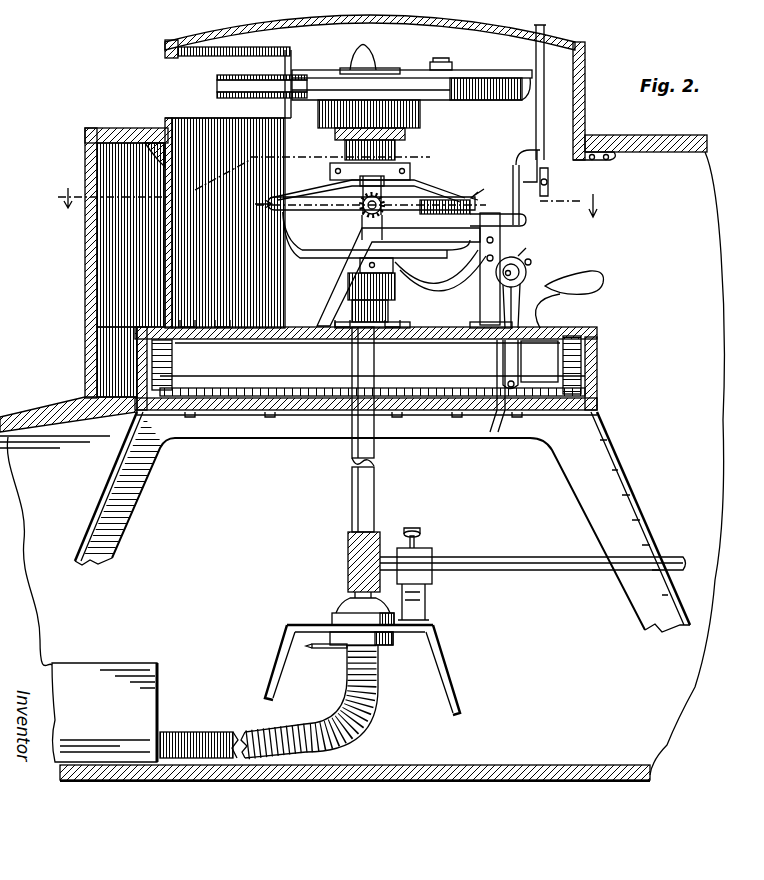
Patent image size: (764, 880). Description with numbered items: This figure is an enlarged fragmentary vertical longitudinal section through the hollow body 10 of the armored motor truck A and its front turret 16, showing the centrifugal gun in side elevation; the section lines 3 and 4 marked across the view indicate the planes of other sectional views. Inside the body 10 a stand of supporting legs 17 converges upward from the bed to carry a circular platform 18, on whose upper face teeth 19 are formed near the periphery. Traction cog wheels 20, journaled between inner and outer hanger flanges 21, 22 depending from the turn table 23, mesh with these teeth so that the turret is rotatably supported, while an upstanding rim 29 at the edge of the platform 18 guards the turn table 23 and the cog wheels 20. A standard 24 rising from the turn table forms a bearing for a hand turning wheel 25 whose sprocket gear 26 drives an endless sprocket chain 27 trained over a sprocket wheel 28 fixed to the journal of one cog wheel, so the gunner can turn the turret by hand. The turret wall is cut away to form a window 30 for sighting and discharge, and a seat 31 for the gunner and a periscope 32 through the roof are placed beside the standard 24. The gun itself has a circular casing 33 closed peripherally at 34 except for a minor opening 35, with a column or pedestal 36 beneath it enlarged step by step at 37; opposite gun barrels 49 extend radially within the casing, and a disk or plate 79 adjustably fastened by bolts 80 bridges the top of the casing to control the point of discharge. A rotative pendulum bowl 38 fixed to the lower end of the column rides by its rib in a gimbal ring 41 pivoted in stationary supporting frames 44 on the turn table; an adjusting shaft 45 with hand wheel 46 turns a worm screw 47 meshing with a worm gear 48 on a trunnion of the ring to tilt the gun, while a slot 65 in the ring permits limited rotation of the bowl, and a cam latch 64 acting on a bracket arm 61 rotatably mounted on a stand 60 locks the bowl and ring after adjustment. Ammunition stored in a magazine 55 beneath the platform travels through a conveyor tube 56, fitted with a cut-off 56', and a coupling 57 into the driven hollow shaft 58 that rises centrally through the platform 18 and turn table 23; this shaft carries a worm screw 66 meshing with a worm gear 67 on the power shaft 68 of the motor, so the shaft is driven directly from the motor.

The hollow body 10 is at (706, 158).
The front turret 16 is at (584, 112).
The supporting legs 17 is at (612, 483).
The circular platform 18 is at (598, 403).
The teeth 19 is at (405, 392).
The traction cog wheels 20 is at (165, 440).
The inner hanger flange 21 is at (539, 361).
The outer hanger flange 22 is at (598, 350).
The turn table 23 is at (597, 333).
The standard 24 is at (525, 268).
The hand turning wheel 25 is at (530, 260).
The sprocket gear 26 is at (522, 255).
The endless sprocket chain 27 is at (500, 350).
The sprocket wheel 28 is at (502, 415).
The upstanding rim 29 is at (598, 376).
The opening or window 30 is at (160, 88).
The seat 31 is at (600, 272).
The periscope 32 is at (560, 187).
The circular casing 33 is at (488, 101).
The closed peripheral portion 34 is at (466, 72).
The minor opening 35 is at (217, 86).
The column or pedestal 36 is at (396, 151).
The enlargement 37 is at (421, 114).
The rotative pendulum bowl 38 is at (330, 258).
The gimbal ring 41 is at (328, 214).
The stationary supporting frames 44 is at (328, 299).
The adjusting shaft 45 is at (405, 198).
The hand wheel 46 is at (515, 180).
The worm screw 47 is at (440, 168).
The worm gear 48 is at (330, 191).
The gun barrels 49 is at (272, 78).
The magazine 55 is at (160, 693).
The conveyor tube 56 is at (269, 701).
The cut-off 56' is at (349, 655).
The coupling 57 is at (332, 620).
The driven hollow shaft 58 is at (352, 450).
The stand 60 is at (400, 305).
The bracket arm 61 is at (440, 283).
The cam latch 64 is at (485, 270).
The slot 65 is at (455, 200).
The worm screw 66 is at (348, 545).
The worm gear 67 is at (398, 545).
The power shaft 68 is at (542, 571).
The disk or plate 79 is at (430, 64).
The bolts 80 is at (370, 50).
The armored motor truck A is at (77, 356).
The section line 3- 3 is at (328, 187).
The section line 4- 4 is at (367, 195).